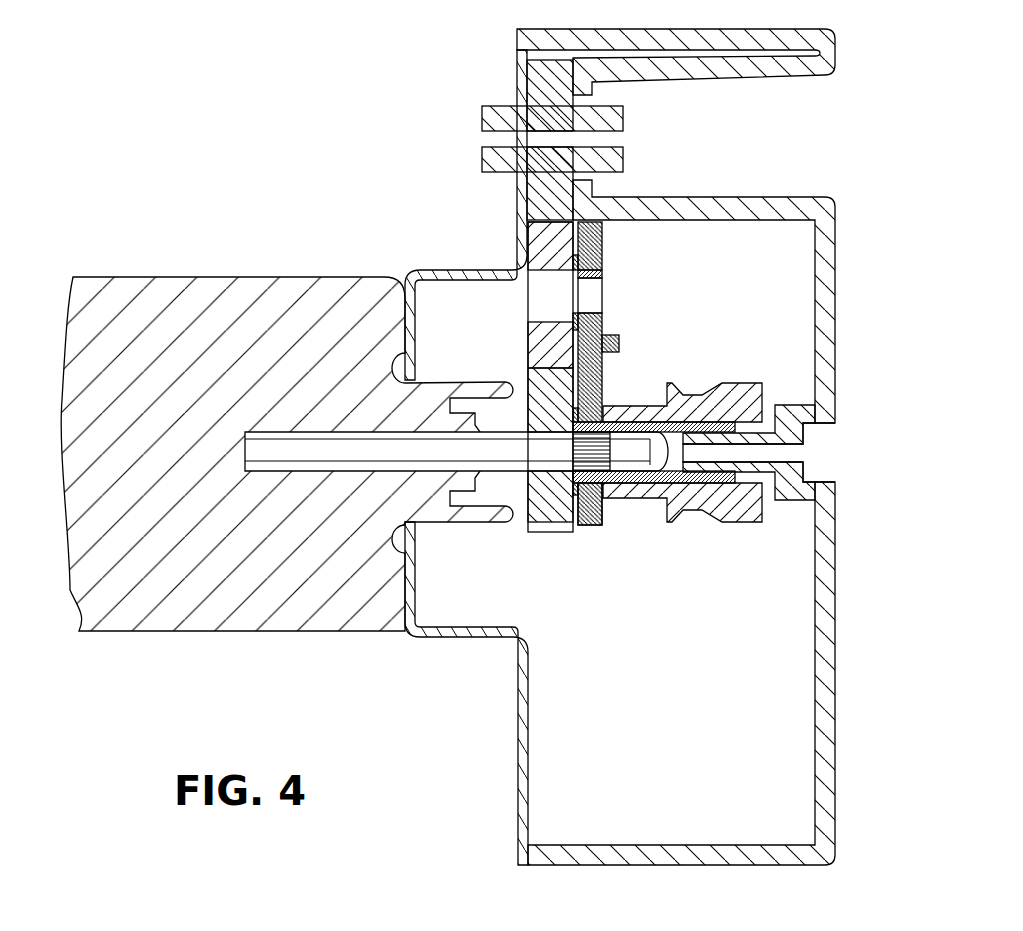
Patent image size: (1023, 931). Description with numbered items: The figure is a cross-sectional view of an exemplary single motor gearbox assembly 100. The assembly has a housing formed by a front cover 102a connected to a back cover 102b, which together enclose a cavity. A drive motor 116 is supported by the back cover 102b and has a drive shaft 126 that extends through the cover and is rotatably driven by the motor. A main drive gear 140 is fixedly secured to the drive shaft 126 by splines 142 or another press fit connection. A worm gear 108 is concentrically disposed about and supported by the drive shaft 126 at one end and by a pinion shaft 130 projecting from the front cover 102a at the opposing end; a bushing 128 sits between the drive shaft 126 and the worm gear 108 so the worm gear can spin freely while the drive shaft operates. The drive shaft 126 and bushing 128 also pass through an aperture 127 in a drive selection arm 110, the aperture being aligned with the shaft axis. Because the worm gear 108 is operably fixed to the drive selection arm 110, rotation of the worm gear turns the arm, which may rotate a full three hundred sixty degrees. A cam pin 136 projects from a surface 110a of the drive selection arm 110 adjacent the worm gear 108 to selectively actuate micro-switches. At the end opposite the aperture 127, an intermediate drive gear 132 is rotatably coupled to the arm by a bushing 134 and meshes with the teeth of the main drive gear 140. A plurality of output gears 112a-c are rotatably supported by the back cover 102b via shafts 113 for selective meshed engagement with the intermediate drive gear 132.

The single motor gearbox assembly 100 is at (877, 176).
The front cover 102a is at (835, 290).
The back cover 102b is at (517, 768).
The worm gear 108 is at (737, 393).
The drive selection arm 110 is at (597, 523).
The surface of the drive selection arm 110a is at (610, 378).
The output gears 112a-c is at (508, 115).
The shafts 113 is at (623, 123).
The drive motor 116 is at (148, 305).
The drive shaft 126 is at (331, 448).
The aperture 127 is at (583, 527).
The bushing 128 is at (727, 473).
The pinion shaft 130 is at (822, 457).
The intermediate drive gear 132 is at (540, 247).
The bushing 134 is at (602, 275).
The cam pin 136 is at (620, 343).
The main drive gear 140 is at (541, 494).
The splines 142 is at (612, 452).